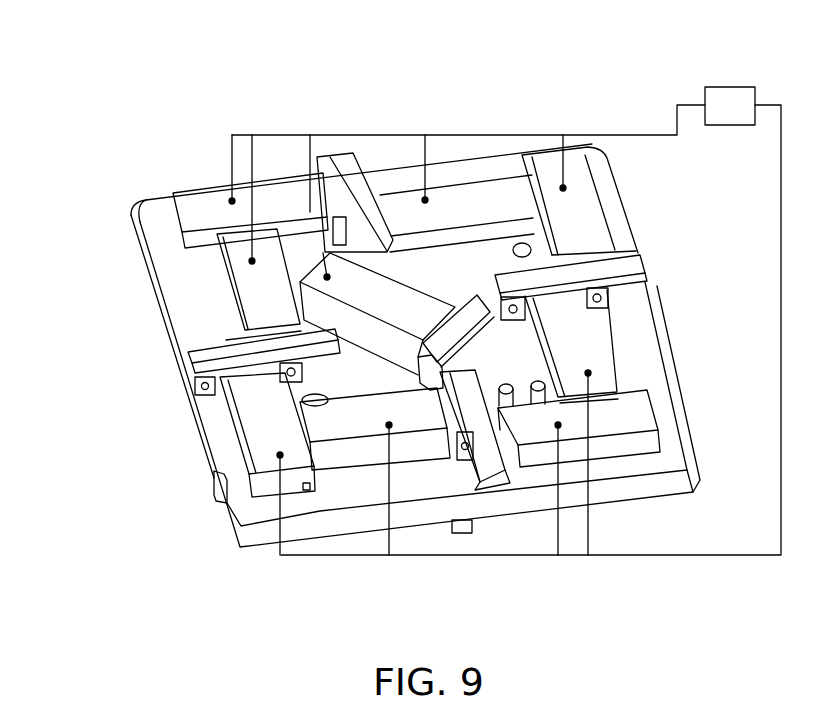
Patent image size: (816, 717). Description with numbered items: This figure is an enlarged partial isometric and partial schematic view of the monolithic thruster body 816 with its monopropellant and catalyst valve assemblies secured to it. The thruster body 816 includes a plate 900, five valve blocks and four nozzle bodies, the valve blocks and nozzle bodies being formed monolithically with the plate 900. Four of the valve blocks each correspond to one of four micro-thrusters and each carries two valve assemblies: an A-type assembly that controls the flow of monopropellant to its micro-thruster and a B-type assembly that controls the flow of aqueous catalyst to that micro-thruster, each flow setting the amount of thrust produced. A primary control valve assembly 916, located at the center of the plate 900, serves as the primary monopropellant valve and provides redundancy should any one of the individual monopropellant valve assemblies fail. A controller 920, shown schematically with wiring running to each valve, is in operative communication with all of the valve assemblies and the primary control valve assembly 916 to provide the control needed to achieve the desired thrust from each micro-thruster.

The plate 900 is at (197, 303).
The thruster body 816 is at (457, 150).
The primary control valve assembly 916 is at (397, 305).
The controller 920 is at (728, 87).